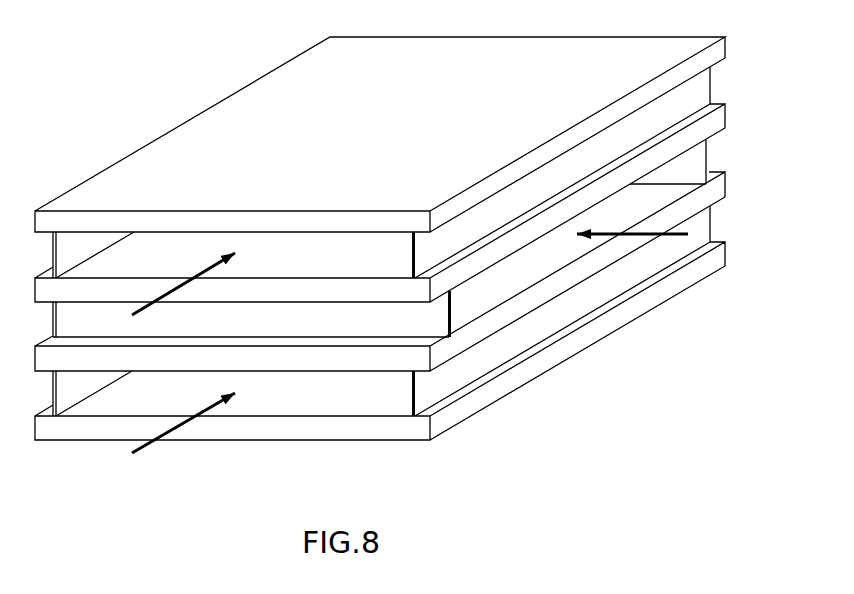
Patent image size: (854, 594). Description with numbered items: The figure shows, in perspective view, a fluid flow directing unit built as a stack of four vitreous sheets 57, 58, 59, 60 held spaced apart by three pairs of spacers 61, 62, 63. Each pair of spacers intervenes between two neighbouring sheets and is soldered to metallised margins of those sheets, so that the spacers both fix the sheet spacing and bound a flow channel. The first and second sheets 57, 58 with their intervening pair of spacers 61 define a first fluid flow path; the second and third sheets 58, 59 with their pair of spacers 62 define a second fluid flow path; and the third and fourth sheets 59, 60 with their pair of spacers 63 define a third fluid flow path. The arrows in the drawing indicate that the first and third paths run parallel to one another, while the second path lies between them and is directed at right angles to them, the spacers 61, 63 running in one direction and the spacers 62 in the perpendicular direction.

The first vitreous sheet 57 is at (720, 46).
The second vitreous sheet 58 is at (720, 118).
The third vitreous sheet 59 is at (720, 187).
The fourth vitreous sheet 60 is at (720, 253).
The first pair of spacers 61 is at (78, 247).
The second pair of spacers 62 is at (425, 322).
The third pair of spacers 63 is at (72, 395).